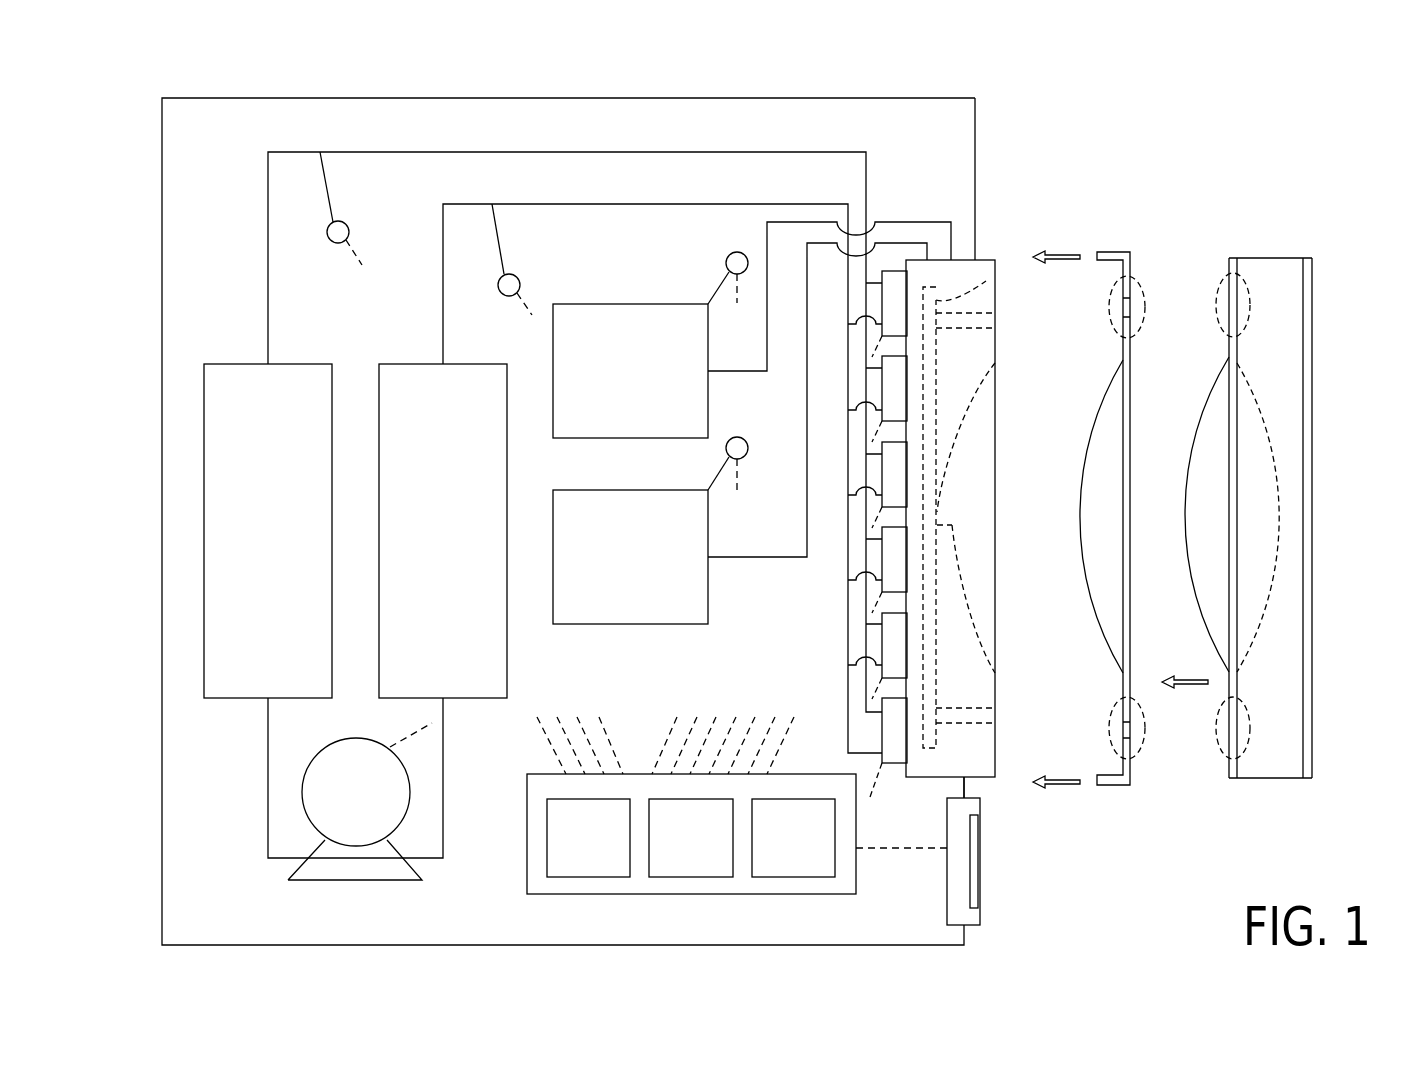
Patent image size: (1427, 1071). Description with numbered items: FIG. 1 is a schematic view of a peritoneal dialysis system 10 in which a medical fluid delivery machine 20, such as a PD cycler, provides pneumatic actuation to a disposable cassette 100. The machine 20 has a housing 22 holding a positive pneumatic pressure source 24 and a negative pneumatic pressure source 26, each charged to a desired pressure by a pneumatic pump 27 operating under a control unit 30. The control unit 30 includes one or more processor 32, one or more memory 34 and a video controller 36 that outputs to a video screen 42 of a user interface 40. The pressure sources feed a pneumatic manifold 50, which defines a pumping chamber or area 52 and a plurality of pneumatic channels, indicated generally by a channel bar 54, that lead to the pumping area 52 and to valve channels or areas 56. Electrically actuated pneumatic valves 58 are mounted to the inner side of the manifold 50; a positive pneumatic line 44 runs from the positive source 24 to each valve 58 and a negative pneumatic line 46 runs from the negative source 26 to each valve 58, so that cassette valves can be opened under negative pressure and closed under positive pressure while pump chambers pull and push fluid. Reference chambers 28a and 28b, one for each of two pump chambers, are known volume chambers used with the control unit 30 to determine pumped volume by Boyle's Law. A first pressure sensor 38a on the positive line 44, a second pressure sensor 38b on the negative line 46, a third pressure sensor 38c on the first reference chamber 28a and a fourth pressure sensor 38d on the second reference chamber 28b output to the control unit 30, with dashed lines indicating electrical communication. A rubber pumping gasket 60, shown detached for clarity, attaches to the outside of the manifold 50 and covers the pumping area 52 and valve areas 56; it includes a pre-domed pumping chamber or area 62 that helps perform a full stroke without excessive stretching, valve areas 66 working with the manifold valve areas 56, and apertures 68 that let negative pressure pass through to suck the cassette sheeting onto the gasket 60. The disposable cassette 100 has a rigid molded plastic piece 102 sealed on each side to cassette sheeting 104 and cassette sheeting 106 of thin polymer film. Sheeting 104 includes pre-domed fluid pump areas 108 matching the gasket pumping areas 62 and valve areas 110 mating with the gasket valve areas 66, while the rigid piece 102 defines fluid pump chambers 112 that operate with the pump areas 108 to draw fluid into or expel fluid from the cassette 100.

The peritoneal dialysis system 10 is at (214, 70).
The medical fluid delivery machine 20 is at (975, 94).
The housing 22 is at (542, 97).
The positive pneumatic pressure source 24 is at (239, 364).
The negative pneumatic pressure source 26 is at (416, 364).
The pneumatic pump 27 is at (355, 789).
The first reference chamber 28a is at (630, 304).
The second reference chamber 28b is at (632, 624).
The control unit 30 is at (521, 901).
The processor 32 is at (588, 838).
The memory 34 is at (691, 838).
The video controller 36 is at (793, 838).
The first pressure sensor 38a is at (337, 243).
The second pressure sensor 38b is at (509, 296).
The third pressure sensor 38c is at (737, 252).
The fourth pressure sensor 38d is at (737, 437).
The user interface 40 is at (947, 893).
The video screen 42 is at (980, 882).
The positive pneumatic line 44 is at (446, 151).
The negative pneumatic line 46 is at (584, 203).
The pneumatic manifold 50 is at (995, 255).
The pumping chamber or area 52 is at (972, 411).
The pneumatic channels 54 is at (988, 282).
The valve channels or areas 56 is at (995, 320).
The electrically actuated pneumatic valves 58 is at (895, 288).
The pumping gasket 60 is at (1131, 247).
The pre-domed pumping chamber or area 62 is at (1084, 572).
The valve areas 66 is at (1108, 307).
The apertures 68 is at (1135, 305).
The disposable cassette 100 is at (1308, 253).
The rigid molded plastic piece 102 is at (1278, 778).
The cassette sheeting 104 is at (1226, 262).
The cassette sheeting 106 is at (1312, 635).
The pre-domed fluid pump areas 108 is at (1203, 413).
The valve areas 110 is at (1250, 312).
The fluid pump chambers 112 is at (1284, 478).